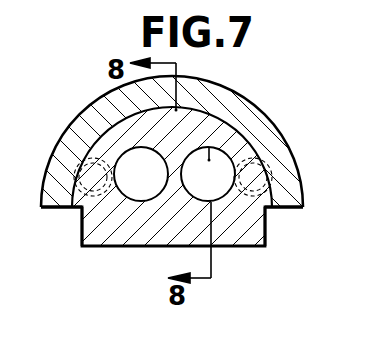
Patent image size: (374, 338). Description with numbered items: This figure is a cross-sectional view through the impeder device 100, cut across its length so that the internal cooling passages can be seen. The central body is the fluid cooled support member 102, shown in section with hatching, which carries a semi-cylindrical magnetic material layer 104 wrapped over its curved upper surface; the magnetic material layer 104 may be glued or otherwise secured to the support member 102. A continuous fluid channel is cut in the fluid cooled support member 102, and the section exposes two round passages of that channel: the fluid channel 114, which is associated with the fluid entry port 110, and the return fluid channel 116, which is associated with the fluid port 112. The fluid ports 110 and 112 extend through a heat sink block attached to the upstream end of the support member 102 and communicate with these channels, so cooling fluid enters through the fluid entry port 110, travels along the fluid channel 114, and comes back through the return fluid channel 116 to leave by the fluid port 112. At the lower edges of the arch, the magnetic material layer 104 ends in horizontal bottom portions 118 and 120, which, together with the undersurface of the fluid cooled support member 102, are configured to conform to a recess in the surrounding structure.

The bearing assembly 100 is at (187, 193).
The fluid cooled support member 102 is at (82, 247).
The magnetic material layer 104 is at (80, 119).
The fluid entry port 110 is at (74, 208).
The fluid port 112 is at (268, 208).
The fluid channel 114 is at (130, 199).
The return fluid channel 116 is at (220, 200).
The horizontal bottom portion 118 is at (48, 214).
The horizontal bottom portion 120 is at (290, 209).